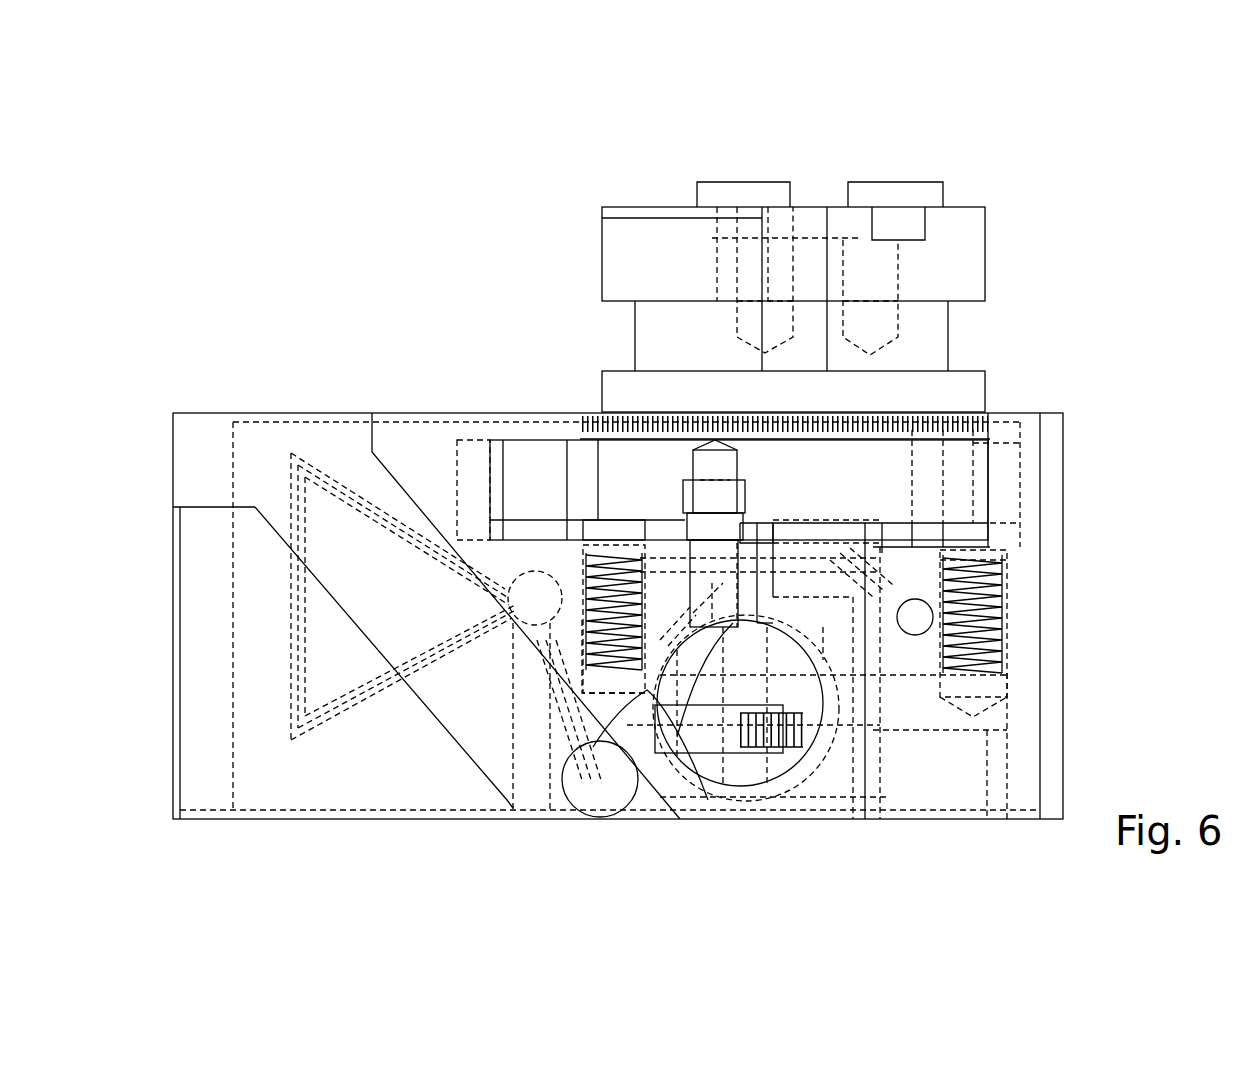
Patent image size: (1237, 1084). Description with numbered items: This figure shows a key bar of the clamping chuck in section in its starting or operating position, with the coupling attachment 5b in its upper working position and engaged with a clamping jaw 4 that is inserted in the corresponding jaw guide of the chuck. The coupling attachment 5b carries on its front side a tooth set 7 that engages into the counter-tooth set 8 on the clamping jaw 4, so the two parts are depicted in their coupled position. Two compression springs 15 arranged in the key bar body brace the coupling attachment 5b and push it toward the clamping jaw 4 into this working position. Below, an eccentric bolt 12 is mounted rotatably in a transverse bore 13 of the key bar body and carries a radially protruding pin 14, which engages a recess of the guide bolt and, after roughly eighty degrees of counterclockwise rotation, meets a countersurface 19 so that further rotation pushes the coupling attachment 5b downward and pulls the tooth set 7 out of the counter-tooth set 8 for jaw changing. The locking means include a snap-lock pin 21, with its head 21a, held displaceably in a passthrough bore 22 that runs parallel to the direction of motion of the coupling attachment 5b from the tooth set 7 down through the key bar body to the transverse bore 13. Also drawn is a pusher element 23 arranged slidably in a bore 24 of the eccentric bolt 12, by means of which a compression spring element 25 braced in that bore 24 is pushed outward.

The clamping jaw 4 is at (618, 260).
The tooth set 7 is at (682, 356).
The counter-tooth set 8 is at (598, 417).
The snap-lock pin 21 is at (747, 341).
The pin head 21a is at (727, 435).
The passthrough bore 22 is at (683, 503).
The coupling attachment 5b is at (873, 483).
The pin 14 is at (757, 600).
The compression spring 15 is at (1003, 608).
The transverse bore 13 is at (823, 658).
The compression spring element 25 is at (783, 755).
The eccentric bolt 12 is at (778, 773).
The countersurface 19 is at (842, 712).
The bore 24 is at (593, 747).
The pusher element 23 is at (708, 800).